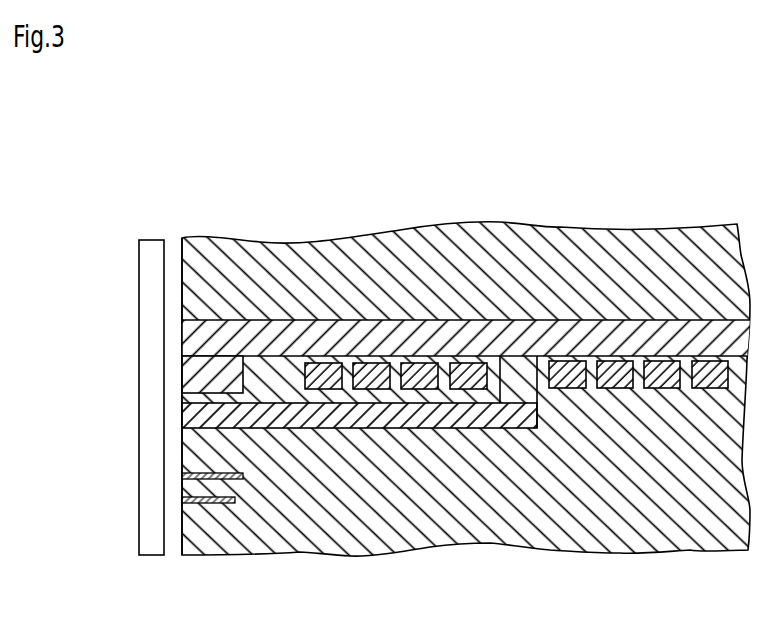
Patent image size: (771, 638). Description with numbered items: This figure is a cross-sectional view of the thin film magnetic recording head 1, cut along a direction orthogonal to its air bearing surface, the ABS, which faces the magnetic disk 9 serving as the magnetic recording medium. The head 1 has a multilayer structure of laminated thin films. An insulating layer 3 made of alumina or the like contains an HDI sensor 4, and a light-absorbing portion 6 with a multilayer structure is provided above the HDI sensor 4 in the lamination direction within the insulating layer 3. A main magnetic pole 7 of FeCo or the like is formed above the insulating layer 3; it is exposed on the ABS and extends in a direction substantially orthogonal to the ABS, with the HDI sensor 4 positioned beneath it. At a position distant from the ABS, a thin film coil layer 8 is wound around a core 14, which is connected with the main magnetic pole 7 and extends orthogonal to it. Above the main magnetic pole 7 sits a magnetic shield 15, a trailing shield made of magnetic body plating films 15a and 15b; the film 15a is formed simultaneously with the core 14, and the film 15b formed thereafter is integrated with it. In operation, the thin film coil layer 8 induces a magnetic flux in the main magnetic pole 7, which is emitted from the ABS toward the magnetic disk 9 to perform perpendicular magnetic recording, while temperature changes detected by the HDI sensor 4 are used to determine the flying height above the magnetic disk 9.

The thin film magnetic recording head 1 is at (266, 192).
The insulating layer 3 is at (643, 525).
The HDI sensor 4 is at (182, 500).
The light-absorbing portion 6 is at (182, 477).
The main magnetic pole 7 is at (183, 417).
The thin film coil layer 8 is at (468, 378).
The magnetic disk 9 is at (148, 260).
The core 14 is at (527, 382).
The magnetic shield 15 is at (402, 356).
The magnetic body plating film 15a is at (183, 382).
The magnetic body plating film 15b is at (183, 344).
The air bearing surface ABS is at (181, 240).